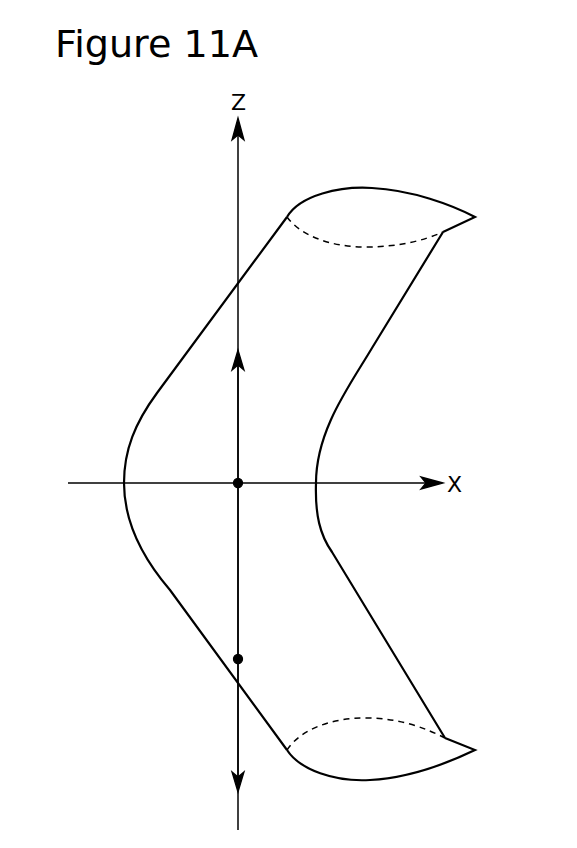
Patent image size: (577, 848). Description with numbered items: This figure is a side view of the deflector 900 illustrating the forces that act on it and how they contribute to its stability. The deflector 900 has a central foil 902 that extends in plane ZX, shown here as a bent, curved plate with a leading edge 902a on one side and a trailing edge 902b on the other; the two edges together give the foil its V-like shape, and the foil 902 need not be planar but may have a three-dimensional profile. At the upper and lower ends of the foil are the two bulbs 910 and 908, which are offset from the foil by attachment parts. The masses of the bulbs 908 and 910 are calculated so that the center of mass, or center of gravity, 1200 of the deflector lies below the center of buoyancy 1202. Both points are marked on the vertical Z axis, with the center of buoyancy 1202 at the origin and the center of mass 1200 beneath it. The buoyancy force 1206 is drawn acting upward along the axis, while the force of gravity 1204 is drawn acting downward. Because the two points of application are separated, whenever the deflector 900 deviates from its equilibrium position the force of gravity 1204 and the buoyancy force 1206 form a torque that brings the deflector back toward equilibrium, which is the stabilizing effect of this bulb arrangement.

The deflector 900 is at (380, 138).
The central foil 902 is at (301, 594).
The leading edge 902a is at (183, 358).
The trailing edge 902b is at (355, 378).
The bulb 908 is at (462, 741).
The bulb 910 is at (385, 230).
The center of mass 1200 is at (245, 659).
The center of buoyancy 1202 is at (241, 481).
The force of gravity 1204 is at (238, 743).
The buoyancy force 1206 is at (238, 410).